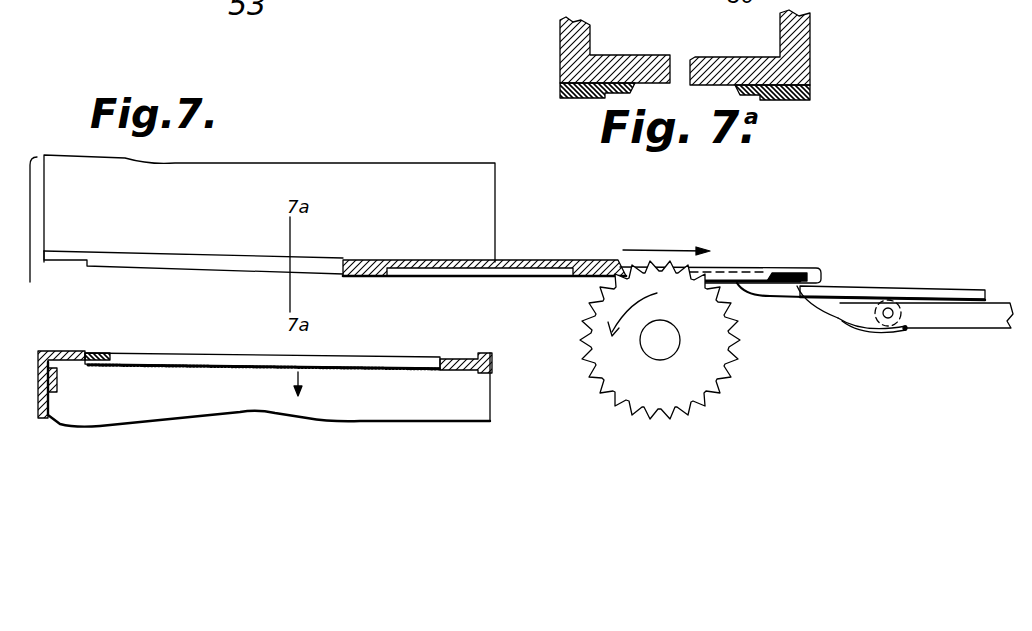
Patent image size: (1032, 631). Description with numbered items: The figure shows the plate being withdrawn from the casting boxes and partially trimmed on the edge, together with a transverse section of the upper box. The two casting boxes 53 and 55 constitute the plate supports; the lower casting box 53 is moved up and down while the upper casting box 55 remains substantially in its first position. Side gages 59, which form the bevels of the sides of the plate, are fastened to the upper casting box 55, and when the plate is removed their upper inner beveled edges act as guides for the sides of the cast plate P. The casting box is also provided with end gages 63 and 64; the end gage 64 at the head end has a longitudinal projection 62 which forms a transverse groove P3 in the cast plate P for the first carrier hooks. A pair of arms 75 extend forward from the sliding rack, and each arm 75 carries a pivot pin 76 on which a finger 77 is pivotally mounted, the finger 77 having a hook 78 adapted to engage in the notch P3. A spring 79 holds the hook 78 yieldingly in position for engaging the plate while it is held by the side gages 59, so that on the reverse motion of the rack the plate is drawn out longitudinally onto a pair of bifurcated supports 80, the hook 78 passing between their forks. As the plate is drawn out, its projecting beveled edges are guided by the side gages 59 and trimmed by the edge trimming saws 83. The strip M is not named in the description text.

In FIG. 7, the lower casting box 53 is at (255, 410).
In FIG. 7, the upper casting box 55 is at (262, 163).
In FIG. 7a, the upper casting box 55 is at (583, 41).
In FIG. 7, the side gages 59 is at (241, 270).
In FIG. 7a, the side gages 59 is at (583, 99).
In FIG. 7, the cast plate P is at (536, 261).
In FIG. 7, the transverse groove or notch P3 is at (805, 270).
In FIG. 7, the edge trimming saws 83 is at (660, 420).
In FIG. 7, the hook 78 is at (798, 288).
In FIG. 7, the finger 77 is at (833, 306).
In FIG. 7, the pivot pin 76 is at (866, 328).
In FIG. 7, the spring 79 is at (893, 327).
In FIG. 7, the supports 80 is at (936, 294).
In FIG. 7, the arms 75 is at (975, 318).
In FIG. 7, the end gage 63 is at (60, 347).
In FIG. 7, the sheet / strip M is at (222, 352).
In FIG. 7, the longitudinal projection 62 is at (470, 357).
In FIG. 7, the end gage 64 is at (490, 376).